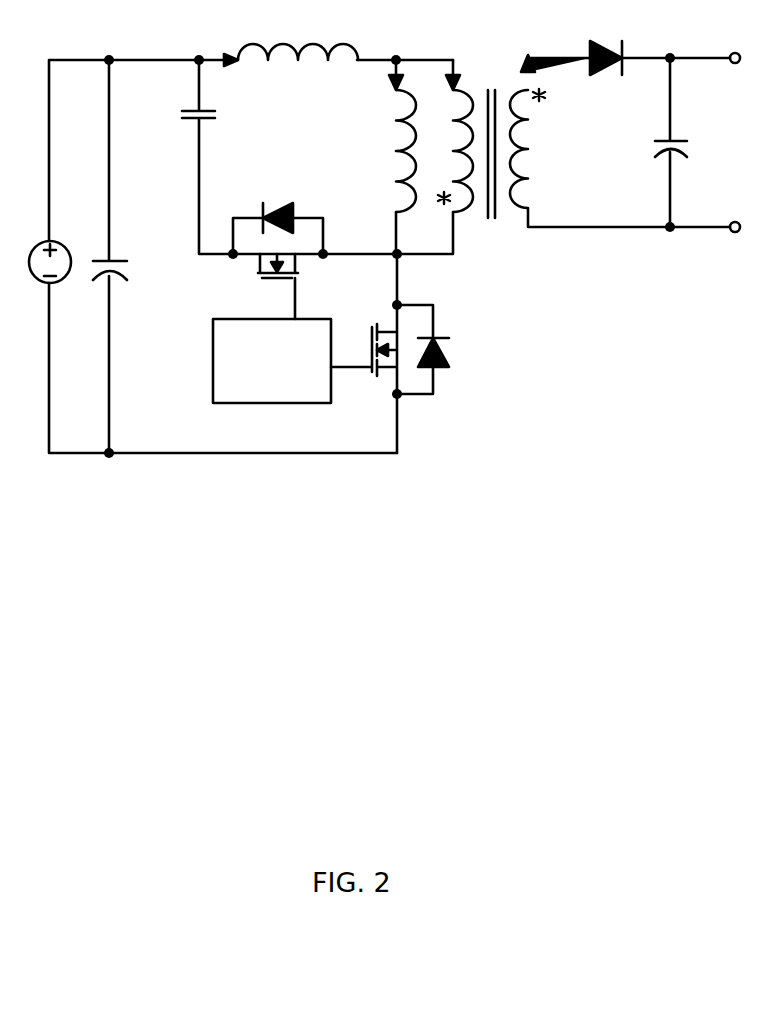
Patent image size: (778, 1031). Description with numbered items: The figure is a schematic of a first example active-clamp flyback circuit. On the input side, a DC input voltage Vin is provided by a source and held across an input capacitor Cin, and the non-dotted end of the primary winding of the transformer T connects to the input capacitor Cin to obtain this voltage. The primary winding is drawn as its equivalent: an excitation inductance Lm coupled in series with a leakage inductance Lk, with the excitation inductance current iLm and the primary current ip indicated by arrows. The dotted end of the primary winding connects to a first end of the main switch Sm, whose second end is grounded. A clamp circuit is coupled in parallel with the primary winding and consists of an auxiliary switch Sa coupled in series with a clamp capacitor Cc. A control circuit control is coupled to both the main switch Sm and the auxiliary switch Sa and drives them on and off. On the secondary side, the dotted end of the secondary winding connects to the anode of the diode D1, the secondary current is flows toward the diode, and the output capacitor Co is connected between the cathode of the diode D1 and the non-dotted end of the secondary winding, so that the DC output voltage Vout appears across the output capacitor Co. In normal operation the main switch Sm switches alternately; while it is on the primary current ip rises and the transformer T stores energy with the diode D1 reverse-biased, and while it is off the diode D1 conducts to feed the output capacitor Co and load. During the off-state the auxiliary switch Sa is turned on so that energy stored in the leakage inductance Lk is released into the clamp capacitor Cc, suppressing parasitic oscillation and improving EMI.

The DC input voltage Vin is at (60, 248).
The input capacitor Cin is at (126, 256).
The clamp capacitor Cc is at (289, 157).
The leakage inductance Lk is at (298, 64).
The excitation inductance Lm is at (389, 157).
The excitation inductance current iLm is at (381, 86).
The primary current ip is at (442, 79).
The transformer T is at (563, 157).
The secondary current is is at (555, 70).
The auxiliary switch Sa is at (285, 261).
The main switch Sm is at (390, 353).
The control circuit control is at (272, 361).
The diode D1 is at (660, 71).
The output capacitor Co is at (656, 142).
The DC output voltage Vout is at (709, 130).